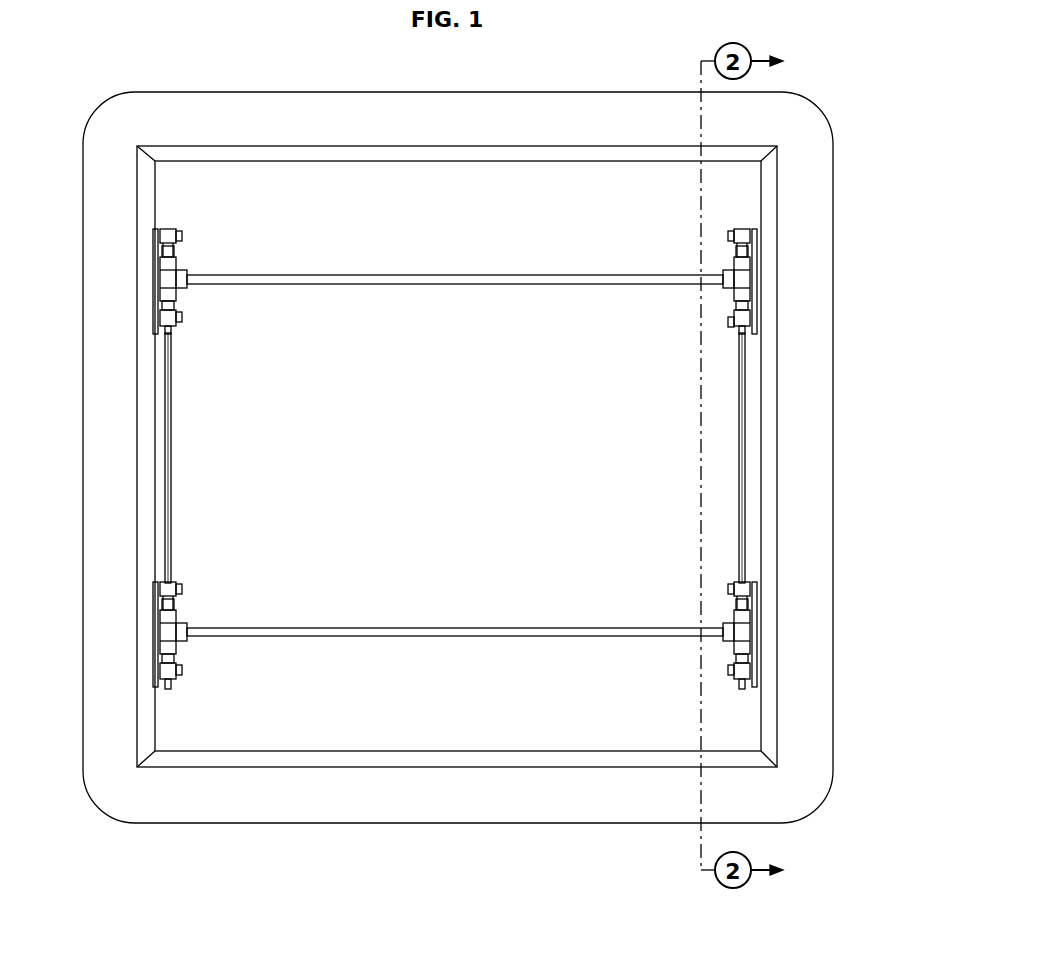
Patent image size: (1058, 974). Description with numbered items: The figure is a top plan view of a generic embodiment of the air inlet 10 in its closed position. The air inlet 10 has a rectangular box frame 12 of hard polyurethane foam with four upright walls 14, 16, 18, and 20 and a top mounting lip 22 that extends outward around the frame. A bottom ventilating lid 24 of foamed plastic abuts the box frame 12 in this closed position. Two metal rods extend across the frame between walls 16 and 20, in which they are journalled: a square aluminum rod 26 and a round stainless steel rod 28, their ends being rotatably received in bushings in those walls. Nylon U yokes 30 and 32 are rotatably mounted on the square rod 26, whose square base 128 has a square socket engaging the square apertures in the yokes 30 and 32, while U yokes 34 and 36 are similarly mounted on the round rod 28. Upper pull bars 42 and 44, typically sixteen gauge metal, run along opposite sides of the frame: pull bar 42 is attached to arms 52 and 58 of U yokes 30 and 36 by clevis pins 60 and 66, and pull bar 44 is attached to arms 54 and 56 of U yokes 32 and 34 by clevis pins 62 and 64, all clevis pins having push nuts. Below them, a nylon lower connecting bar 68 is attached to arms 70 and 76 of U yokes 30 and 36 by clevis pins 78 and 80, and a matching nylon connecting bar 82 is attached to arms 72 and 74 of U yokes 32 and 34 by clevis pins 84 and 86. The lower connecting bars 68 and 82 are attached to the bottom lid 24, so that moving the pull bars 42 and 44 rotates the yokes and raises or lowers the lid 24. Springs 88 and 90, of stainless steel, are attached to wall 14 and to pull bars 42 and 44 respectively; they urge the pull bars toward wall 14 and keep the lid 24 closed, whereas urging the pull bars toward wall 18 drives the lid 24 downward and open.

The air inlet 10 is at (458, 489).
The rectangular box frame 12 is at (457, 456).
The upright wall 14 is at (458, 188).
The upright wall 16 is at (769, 170).
The upright wall 18 is at (458, 725).
The upright wall 20 is at (156, 207).
The top mounting lip 22 is at (458, 439).
The bottom ventilating lid 24 is at (286, 456).
The square metal rod 26 is at (455, 262).
The round metal rod 28 is at (455, 616).
The U yoke 30 is at (153, 272).
The U yoke 32 is at (758, 277).
The U yoke 34 is at (759, 632).
The U yoke 36 is at (152, 631).
The upper pull bar 42 is at (177, 445).
The upper pull bar 44 is at (737, 440).
The arm 52 is at (113, 226).
The arm 54 is at (811, 226).
The arm 56 is at (760, 606).
The arm 58 is at (112, 631).
The clevis pin 60 is at (159, 240).
The clevis pin 62 is at (752, 240).
The clevis pin 64 is at (808, 577).
The clevis pin 66 is at (116, 578).
The lower connecting bar 68 is at (191, 707).
The arm 70 is at (156, 328).
The arm 72 is at (811, 338).
The arm 74 is at (757, 658).
The arm 76 is at (160, 681).
The clevis pin 78 is at (104, 281).
The clevis pin 80 is at (183, 672).
The connecting bar 82 is at (720, 702).
The clevis pin 84 is at (752, 322).
The clevis pin 86 is at (727, 673).
The spring 88 is at (258, 226).
The spring 90 is at (670, 226).
The square base 128 is at (189, 287).